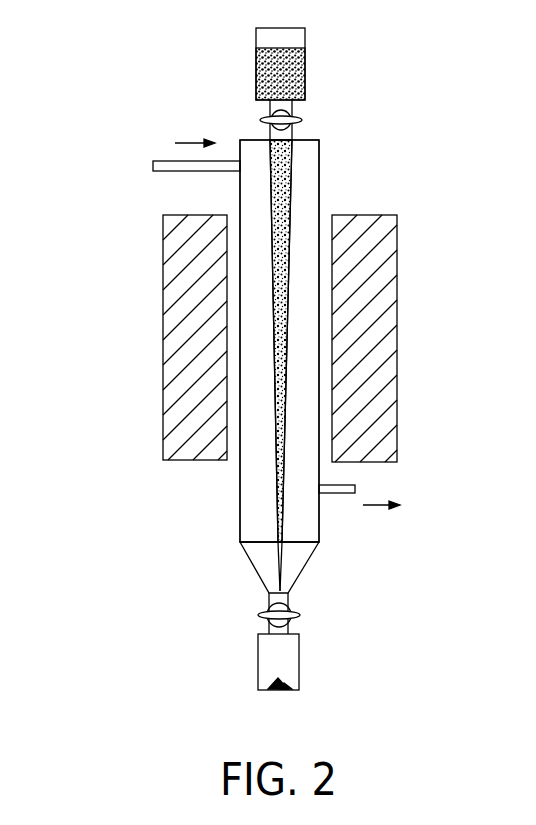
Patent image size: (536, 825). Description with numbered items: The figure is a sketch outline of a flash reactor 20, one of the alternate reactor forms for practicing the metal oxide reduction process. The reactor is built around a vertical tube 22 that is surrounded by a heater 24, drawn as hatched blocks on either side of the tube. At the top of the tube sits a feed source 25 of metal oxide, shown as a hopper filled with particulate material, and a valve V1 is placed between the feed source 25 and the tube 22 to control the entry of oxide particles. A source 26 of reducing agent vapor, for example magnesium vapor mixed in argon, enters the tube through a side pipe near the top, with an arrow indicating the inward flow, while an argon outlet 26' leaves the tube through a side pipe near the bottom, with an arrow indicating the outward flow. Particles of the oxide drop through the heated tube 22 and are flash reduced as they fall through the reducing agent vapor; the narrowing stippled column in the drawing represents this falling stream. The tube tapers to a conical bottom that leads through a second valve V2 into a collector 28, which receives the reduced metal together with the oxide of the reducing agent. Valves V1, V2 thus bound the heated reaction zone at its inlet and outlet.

The flash reactor 20 is at (348, 138).
The tubular reactor 22 is at (320, 197).
The heater 24 is at (397, 302).
The feed source 25 is at (305, 70).
The source of reducing agent vapor 26 is at (163, 178).
The argon outlet 26' is at (397, 483).
The collector 28 is at (299, 636).
The valve V1 is at (298, 116).
The valve V2 is at (290, 600).